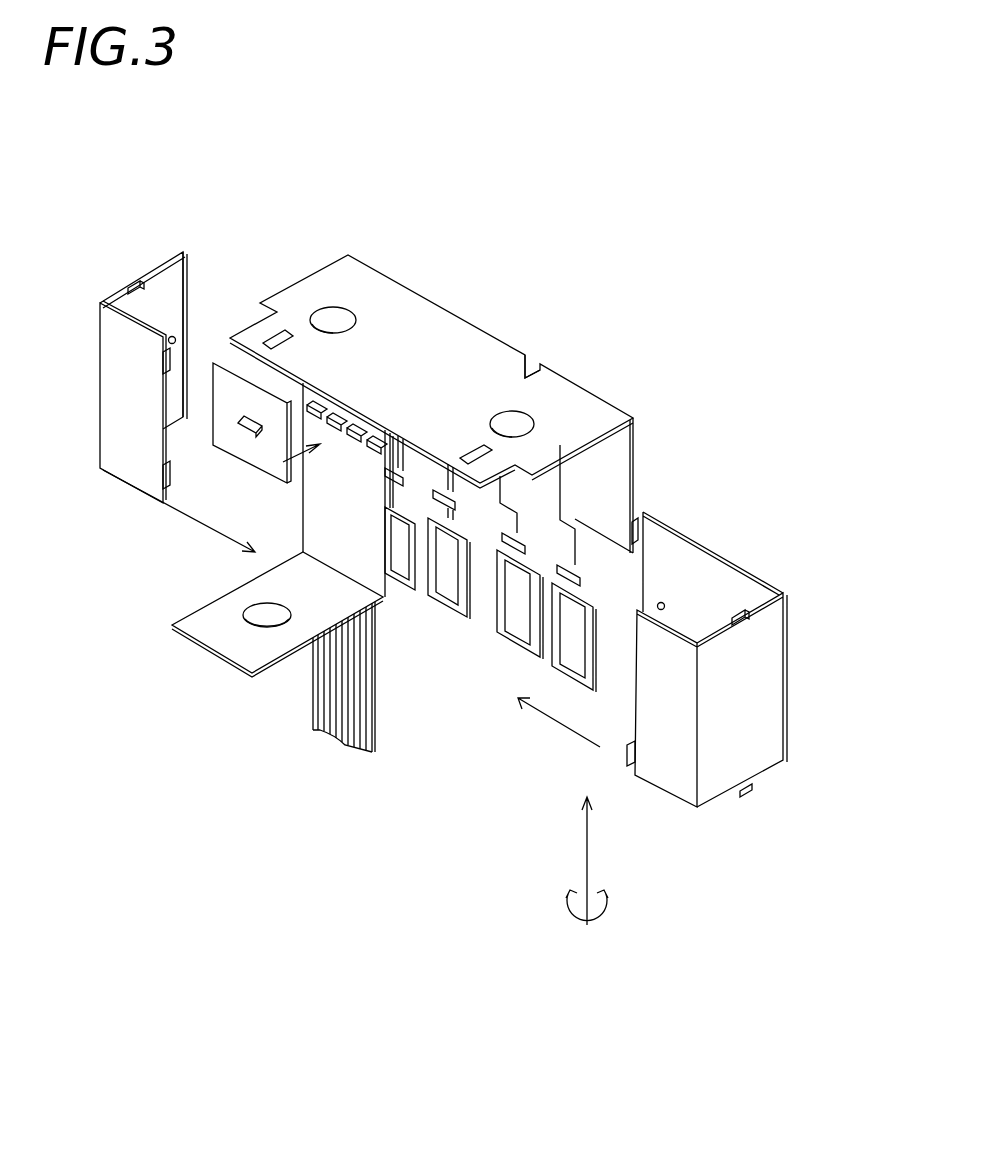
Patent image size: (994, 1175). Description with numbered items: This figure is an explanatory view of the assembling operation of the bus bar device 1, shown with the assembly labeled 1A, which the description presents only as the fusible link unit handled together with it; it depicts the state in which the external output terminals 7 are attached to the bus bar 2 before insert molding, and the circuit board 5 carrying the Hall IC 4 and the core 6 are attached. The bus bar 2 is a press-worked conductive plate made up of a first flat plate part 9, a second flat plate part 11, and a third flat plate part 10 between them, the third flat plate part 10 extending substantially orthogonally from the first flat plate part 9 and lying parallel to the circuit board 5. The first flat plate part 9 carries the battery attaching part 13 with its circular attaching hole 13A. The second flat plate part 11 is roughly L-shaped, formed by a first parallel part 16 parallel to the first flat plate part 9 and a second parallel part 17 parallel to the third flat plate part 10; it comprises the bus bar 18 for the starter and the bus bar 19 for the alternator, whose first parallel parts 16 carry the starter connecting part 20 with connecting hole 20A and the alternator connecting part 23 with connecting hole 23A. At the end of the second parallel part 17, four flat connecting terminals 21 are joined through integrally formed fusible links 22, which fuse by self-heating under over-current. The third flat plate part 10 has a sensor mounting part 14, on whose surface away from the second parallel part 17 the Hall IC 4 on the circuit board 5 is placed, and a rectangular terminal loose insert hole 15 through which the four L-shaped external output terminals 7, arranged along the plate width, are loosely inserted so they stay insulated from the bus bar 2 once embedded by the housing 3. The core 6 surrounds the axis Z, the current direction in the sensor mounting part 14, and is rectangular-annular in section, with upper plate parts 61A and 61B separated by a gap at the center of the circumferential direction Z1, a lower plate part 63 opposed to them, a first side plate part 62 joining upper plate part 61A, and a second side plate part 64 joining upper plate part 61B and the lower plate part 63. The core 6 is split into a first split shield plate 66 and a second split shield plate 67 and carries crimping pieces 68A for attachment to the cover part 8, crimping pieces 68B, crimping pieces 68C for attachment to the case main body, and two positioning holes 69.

The bus bar device 1 is at (515, 225).
The main unit 1A is at (674, 158).
The bus bar 2 is at (485, 300).
The housing 3 is at (660, 205).
The Hall IC 4 is at (250, 434).
The circuit board 5 is at (230, 437).
The core 6 is at (786, 400).
The external output terminals 7 is at (375, 655).
The cover part 8 is at (660, 345).
The first flat plate part 9 is at (255, 590).
The third flat plate part 10 is at (312, 507).
The second flat plate part 11 is at (786, 316).
The battery attaching part 13 is at (278, 648).
The attaching hole 13A is at (268, 620).
The sensor mounting part 14 is at (397, 577).
The terminal loose insert hole 15 is at (318, 399).
The first parallel part 16 is at (490, 362).
The second parallel part 17 is at (640, 432).
The bus bar for starter 18 is at (425, 305).
The bus bar for alternator 19 is at (585, 402).
The starter connecting part 20 is at (343, 290).
The connecting hole 20A is at (312, 312).
The connecting terminals 21 is at (612, 722).
The fusible links 22 is at (400, 478).
The alternator connecting part 23 is at (577, 430).
The connecting hole 23A is at (517, 427).
The upper plate part 61A is at (132, 475).
The upper plate part 61B is at (670, 783).
The first side plate part 62 is at (165, 272).
The lower plate part 63 is at (740, 580).
The second side plate part 64 is at (770, 668).
The first split shield plate 66 is at (186, 256).
The second split shield plate 67 is at (742, 553).
The crimping pieces 68A is at (172, 362).
The crimping pieces 68B is at (645, 515).
The crimping pieces 68C is at (133, 285).
The positioning holes 69 is at (178, 328).
The axis Z is at (588, 878).
The direction around axis Z Z1 is at (590, 918).